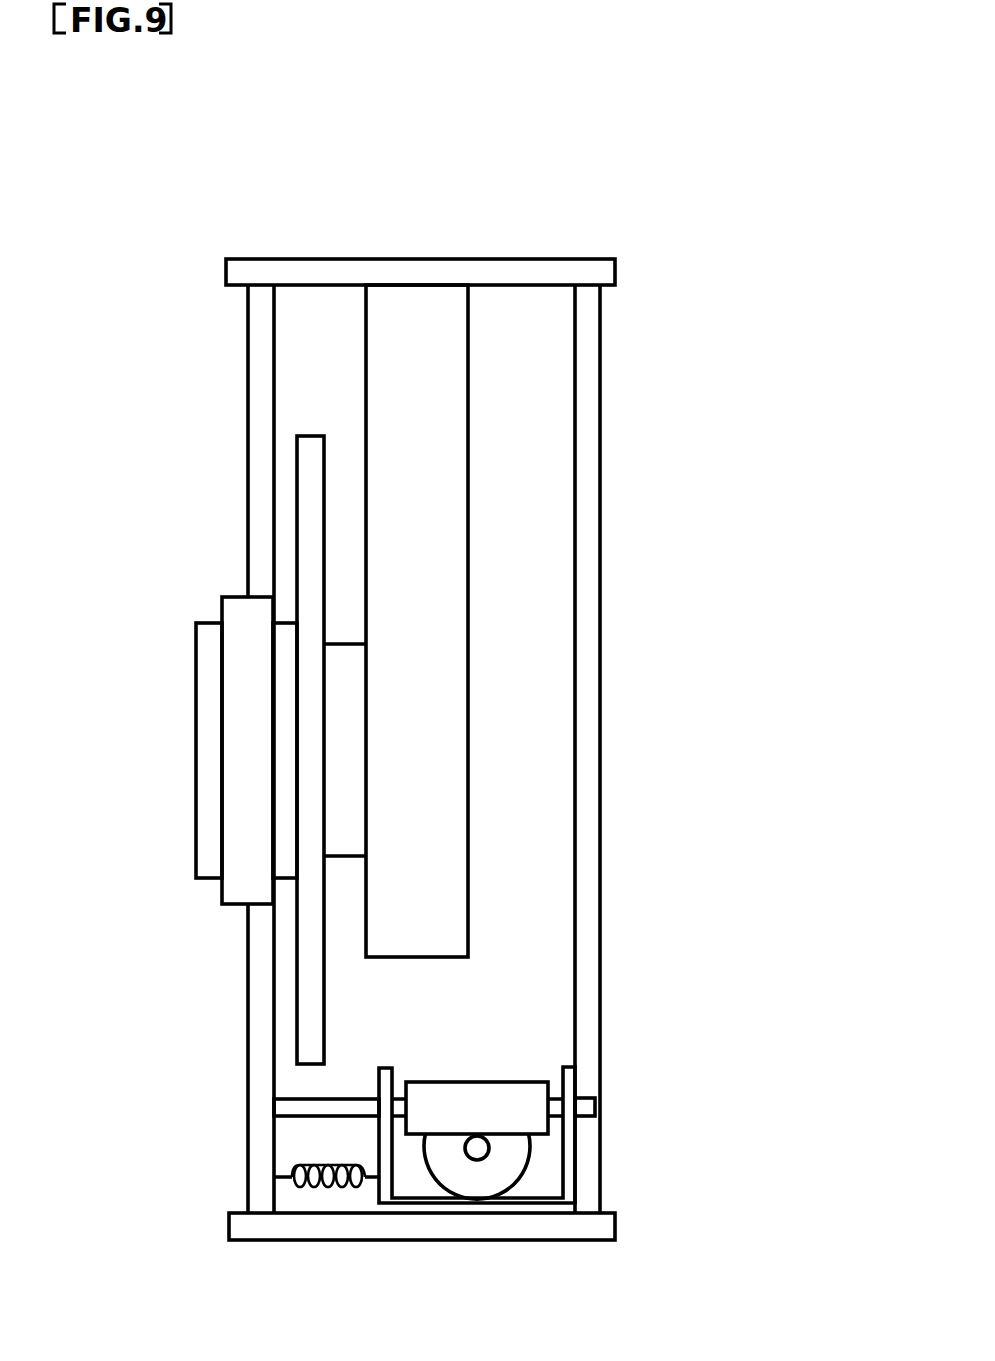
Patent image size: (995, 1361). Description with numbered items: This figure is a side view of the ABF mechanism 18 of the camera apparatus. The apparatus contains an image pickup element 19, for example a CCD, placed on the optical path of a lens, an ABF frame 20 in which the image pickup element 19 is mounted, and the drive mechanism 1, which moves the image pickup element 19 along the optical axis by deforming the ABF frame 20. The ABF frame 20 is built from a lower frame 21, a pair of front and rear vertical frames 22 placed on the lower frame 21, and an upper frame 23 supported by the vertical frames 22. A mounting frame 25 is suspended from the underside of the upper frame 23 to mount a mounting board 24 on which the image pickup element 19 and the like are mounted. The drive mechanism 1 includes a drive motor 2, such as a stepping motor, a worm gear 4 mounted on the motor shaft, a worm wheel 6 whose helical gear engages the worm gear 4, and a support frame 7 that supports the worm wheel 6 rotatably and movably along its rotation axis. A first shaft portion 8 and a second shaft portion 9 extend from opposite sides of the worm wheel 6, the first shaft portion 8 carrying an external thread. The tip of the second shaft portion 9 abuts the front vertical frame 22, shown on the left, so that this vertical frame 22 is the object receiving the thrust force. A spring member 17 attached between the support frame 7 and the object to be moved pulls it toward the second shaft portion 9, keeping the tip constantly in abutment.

The drive mechanism 1 is at (509, 1083).
The drive motor 2 is at (530, 1147).
The worm gear 4 is at (485, 1152).
The worm wheel 6 is at (476, 1081).
The support frame 7 is at (385, 1068).
The first shaft portion 8 is at (584, 1097).
The second shaft portion 9 is at (327, 1116).
The spring member 17 is at (327, 1187).
The ABF mechanism 18 is at (608, 162).
The image pickup element 19 is at (196, 748).
The ABF frame 20 is at (310, 257).
The lower frame 21 is at (427, 1240).
The vertical frames 22 is at (246, 441).
The upper frame 23 is at (421, 260).
The mounting board 24 is at (297, 1012).
The mounting frame 25 is at (468, 622).